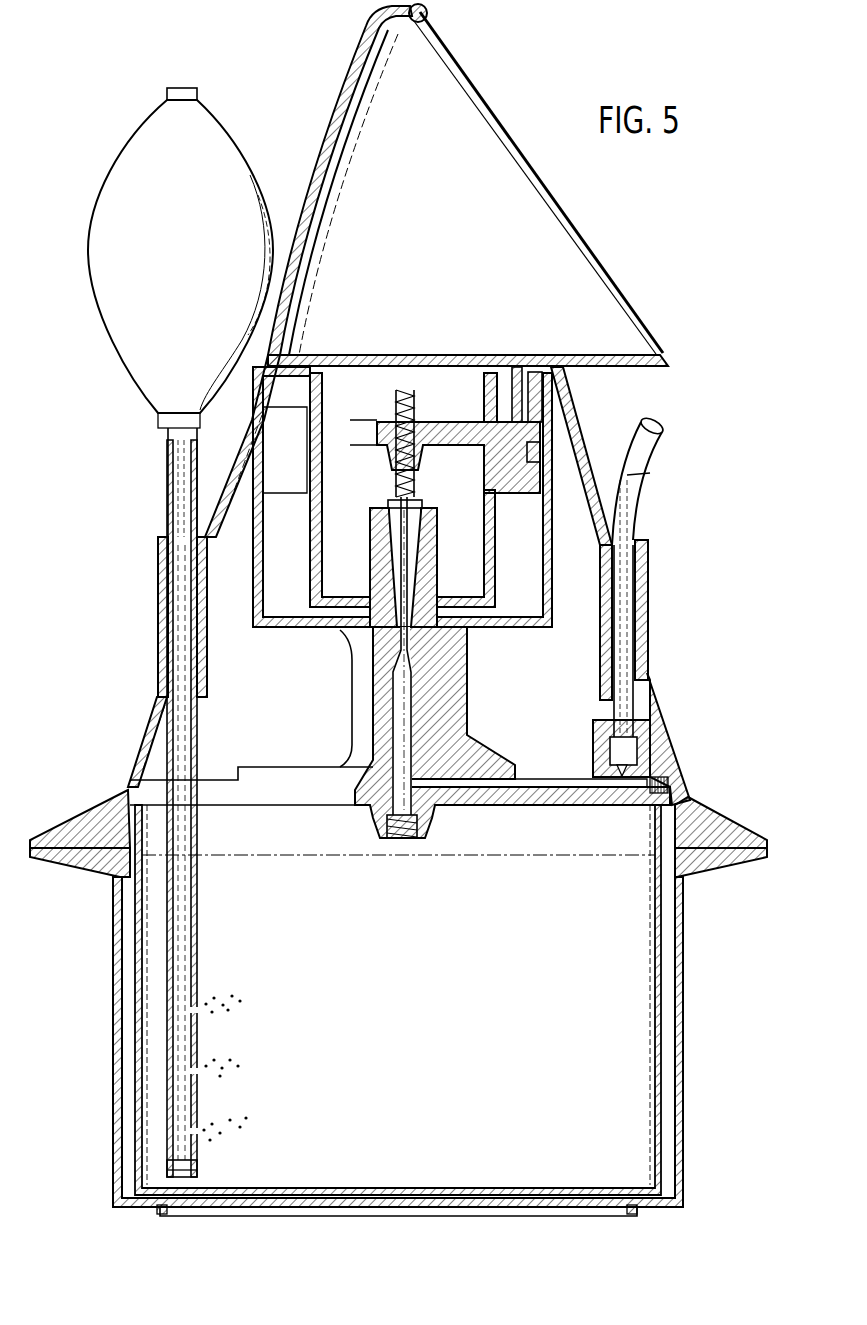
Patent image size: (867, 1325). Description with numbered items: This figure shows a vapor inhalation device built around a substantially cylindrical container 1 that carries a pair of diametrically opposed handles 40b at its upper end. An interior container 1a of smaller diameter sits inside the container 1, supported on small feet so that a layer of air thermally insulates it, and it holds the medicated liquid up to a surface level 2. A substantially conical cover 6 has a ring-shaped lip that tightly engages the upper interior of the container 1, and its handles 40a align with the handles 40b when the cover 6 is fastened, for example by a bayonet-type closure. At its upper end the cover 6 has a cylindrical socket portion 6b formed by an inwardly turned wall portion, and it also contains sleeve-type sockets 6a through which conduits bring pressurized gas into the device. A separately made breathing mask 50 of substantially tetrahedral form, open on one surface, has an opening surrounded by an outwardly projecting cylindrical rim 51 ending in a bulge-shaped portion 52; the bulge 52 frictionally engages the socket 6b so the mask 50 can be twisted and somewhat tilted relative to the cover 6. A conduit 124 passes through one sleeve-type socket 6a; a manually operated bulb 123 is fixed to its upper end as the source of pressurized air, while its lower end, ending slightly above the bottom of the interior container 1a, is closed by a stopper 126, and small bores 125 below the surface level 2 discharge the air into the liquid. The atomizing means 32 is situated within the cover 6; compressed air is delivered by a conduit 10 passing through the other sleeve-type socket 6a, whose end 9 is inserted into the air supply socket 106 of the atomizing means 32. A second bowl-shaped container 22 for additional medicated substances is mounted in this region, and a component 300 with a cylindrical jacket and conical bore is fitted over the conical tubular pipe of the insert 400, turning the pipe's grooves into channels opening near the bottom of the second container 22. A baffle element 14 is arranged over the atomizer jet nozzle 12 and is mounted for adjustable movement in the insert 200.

The container 1 is at (682, 979).
The interior container 1a is at (662, 938).
The surface level 2 is at (509, 859).
The conical cover 6 is at (137, 736).
The sleeve-type socket 6a is at (644, 634).
The cylindrical socket portion 6b is at (532, 397).
The end of conduit 9 is at (618, 749).
The conduit 10 is at (666, 442).
The atomizer jet nozzle 12 is at (392, 496).
The baffle element 14 is at (402, 390).
The second bowl-shaped container 22 is at (548, 600).
The atomizing means 32 is at (320, 634).
The handles 40a is at (740, 824).
The handles 40b is at (742, 872).
The breathing mask 50 is at (652, 352).
The cylindrical rim 51 is at (513, 385).
The bulge-shaped portion 52 is at (527, 442).
The air supply socket 106 is at (643, 747).
The bulb 123 is at (196, 253).
The conduit 124 is at (196, 930).
The small bores 125 is at (198, 1132).
The stopper 126 is at (184, 1162).
The insert 200 is at (447, 430).
The component 300 is at (493, 546).
The insert 400 is at (487, 698).